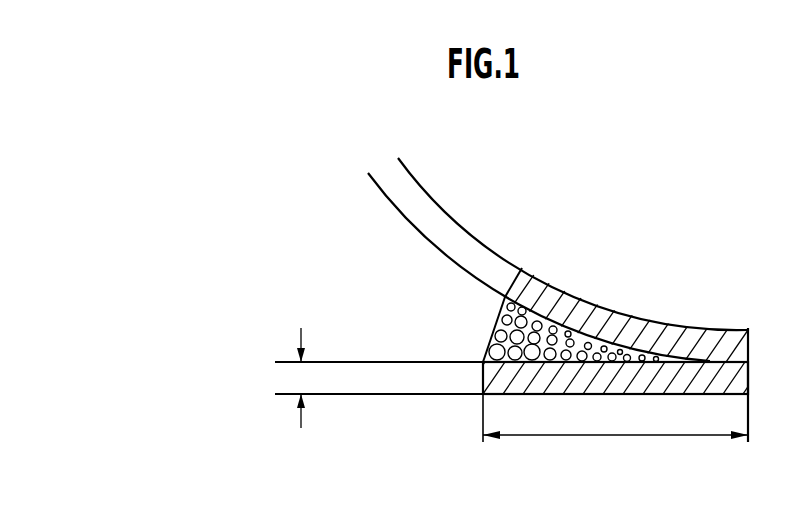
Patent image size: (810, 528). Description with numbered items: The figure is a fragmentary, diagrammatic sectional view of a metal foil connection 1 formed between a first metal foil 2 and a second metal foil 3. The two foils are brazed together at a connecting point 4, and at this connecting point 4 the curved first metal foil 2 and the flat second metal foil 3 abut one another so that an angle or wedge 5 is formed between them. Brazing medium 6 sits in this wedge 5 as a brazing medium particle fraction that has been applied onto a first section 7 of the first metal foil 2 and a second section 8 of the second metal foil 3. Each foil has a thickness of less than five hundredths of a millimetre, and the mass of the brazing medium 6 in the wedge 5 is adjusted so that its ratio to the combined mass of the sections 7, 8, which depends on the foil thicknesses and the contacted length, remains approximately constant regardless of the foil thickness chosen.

The metal foil connection 1 is at (741, 272).
The first metal foil 2 is at (445, 225).
The second metal foil 3 is at (365, 385).
The connecting point 4 is at (646, 408).
The angle or wedge 5 is at (462, 290).
The brazing medium 6 is at (503, 318).
The first section 7 is at (560, 297).
The second section 8 is at (700, 383).